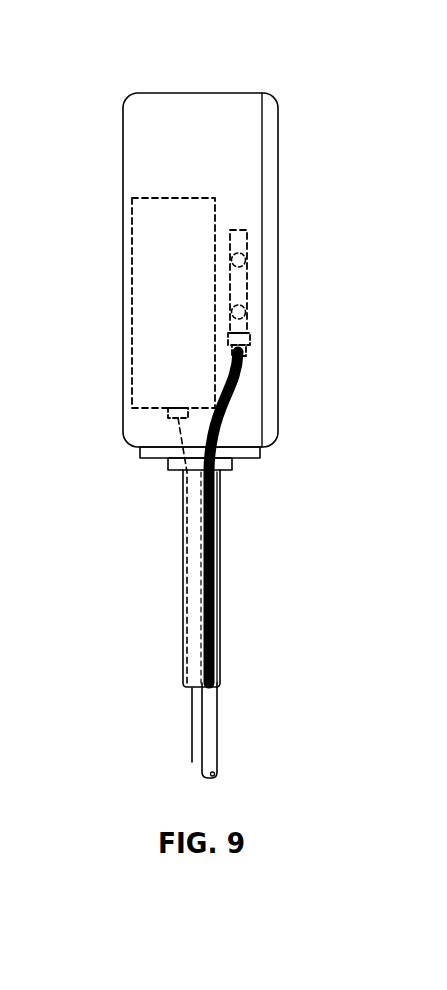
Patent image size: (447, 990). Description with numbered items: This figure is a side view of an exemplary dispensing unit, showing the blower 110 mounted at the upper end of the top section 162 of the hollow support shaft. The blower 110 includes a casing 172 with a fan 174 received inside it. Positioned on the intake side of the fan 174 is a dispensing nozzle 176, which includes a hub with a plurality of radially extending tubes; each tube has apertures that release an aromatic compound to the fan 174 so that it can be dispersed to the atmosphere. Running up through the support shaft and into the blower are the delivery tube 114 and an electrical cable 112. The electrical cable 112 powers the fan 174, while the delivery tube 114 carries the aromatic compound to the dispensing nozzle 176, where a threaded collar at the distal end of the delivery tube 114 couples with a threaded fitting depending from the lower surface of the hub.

The blower 110 is at (153, 64).
The casing 172 is at (123, 141).
The fan 174 is at (146, 230).
The dispensing nozzle 176 is at (247, 270).
The top section 162 is at (182, 563).
The delivery tube 114 is at (219, 727).
The electrical cable 112 is at (191, 733).